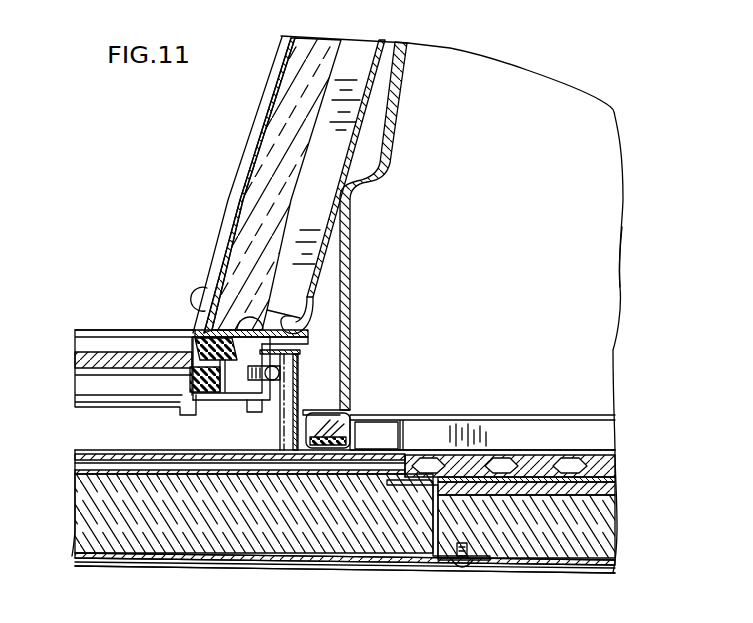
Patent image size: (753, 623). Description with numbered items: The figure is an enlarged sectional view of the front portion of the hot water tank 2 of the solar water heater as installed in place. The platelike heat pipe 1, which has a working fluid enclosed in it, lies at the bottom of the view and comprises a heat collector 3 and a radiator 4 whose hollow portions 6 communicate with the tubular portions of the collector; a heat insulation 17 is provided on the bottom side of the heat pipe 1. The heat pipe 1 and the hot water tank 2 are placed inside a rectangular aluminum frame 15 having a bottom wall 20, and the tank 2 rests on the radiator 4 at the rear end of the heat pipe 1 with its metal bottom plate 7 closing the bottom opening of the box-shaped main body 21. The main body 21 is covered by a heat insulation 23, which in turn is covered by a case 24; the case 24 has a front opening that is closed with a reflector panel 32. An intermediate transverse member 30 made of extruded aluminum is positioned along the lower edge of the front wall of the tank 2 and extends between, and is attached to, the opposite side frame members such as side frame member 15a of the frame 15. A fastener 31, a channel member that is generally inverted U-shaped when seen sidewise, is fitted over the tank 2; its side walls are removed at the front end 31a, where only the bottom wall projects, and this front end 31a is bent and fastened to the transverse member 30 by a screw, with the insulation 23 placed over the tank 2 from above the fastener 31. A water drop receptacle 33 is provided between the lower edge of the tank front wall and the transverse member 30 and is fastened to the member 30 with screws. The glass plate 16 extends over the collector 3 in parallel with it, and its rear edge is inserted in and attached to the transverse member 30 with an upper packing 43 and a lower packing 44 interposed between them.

The platelike heat pipe 1 is at (100, 455).
The hot water tank 2 is at (607, 217).
The heat collector 3 is at (123, 455).
The radiator 4 is at (532, 468).
The hollow portions 6 is at (499, 466).
The metal bottom plate 7 is at (445, 415).
The rectangular frame 15 is at (113, 335).
The side frame member 15a is at (83, 333).
The glass plate 16 is at (157, 358).
The heat insulation 17 is at (325, 548).
The bottom wall 20 is at (233, 568).
The main body 21 is at (605, 272).
The heat insulation 23 is at (267, 203).
The case 24 is at (263, 97).
The intermediate transverse member 30 is at (240, 403).
The fastener 31 is at (358, 52).
The front end 31a is at (283, 325).
The reflector panel 32 is at (263, 137).
The water drop receptacle 33 is at (295, 378).
The upper packing 43 is at (193, 337).
The lower packing 44 is at (187, 373).